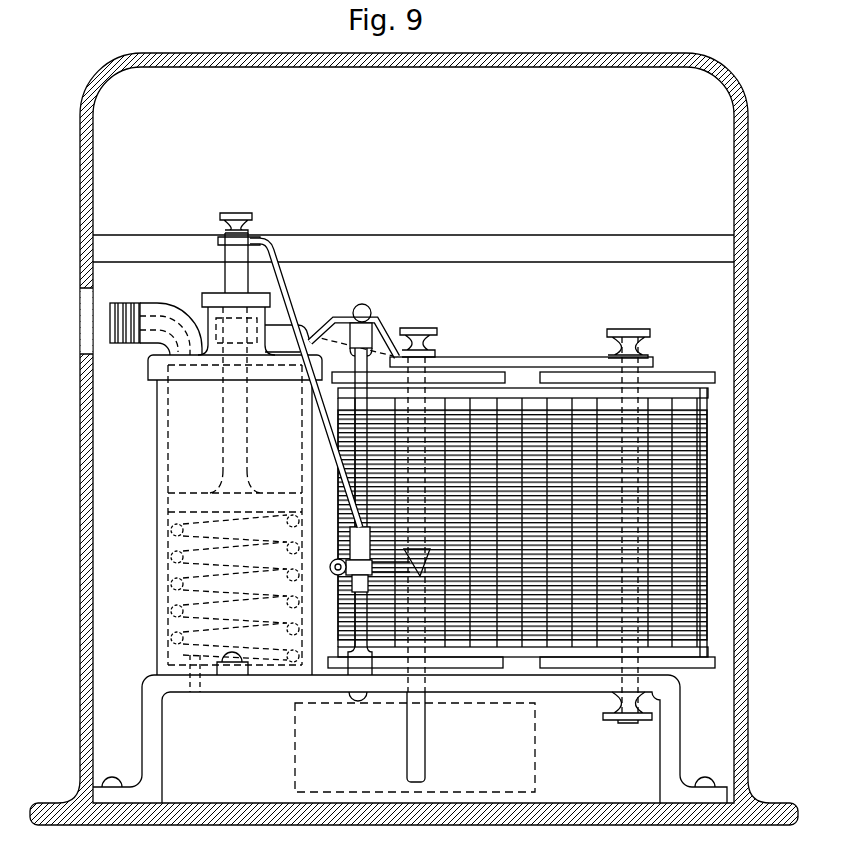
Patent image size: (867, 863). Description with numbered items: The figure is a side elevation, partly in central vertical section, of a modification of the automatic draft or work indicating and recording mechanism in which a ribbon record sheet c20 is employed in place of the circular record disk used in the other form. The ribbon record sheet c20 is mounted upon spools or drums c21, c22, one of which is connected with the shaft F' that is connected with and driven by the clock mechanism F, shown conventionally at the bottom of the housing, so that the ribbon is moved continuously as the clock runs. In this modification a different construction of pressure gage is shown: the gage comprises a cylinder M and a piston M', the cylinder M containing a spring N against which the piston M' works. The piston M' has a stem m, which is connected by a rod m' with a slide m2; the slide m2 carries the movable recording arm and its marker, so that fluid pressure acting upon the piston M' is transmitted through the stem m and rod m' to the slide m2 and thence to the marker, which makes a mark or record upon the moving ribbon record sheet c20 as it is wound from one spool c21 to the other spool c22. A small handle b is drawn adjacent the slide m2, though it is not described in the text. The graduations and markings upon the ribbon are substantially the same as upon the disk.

The cylinder M is at (221, 523).
The piston M' is at (235, 486).
The spring N is at (193, 526).
The stem m is at (236, 341).
The rod m' is at (305, 384).
The slide m2 is at (356, 544).
The handle b is at (417, 562).
The ribbon record sheet c20 is at (705, 552).
The spool c21 is at (497, 379).
The spool c22 is at (671, 378).
The clock mechanism F is at (415, 747).
The shaft F' is at (426, 555).